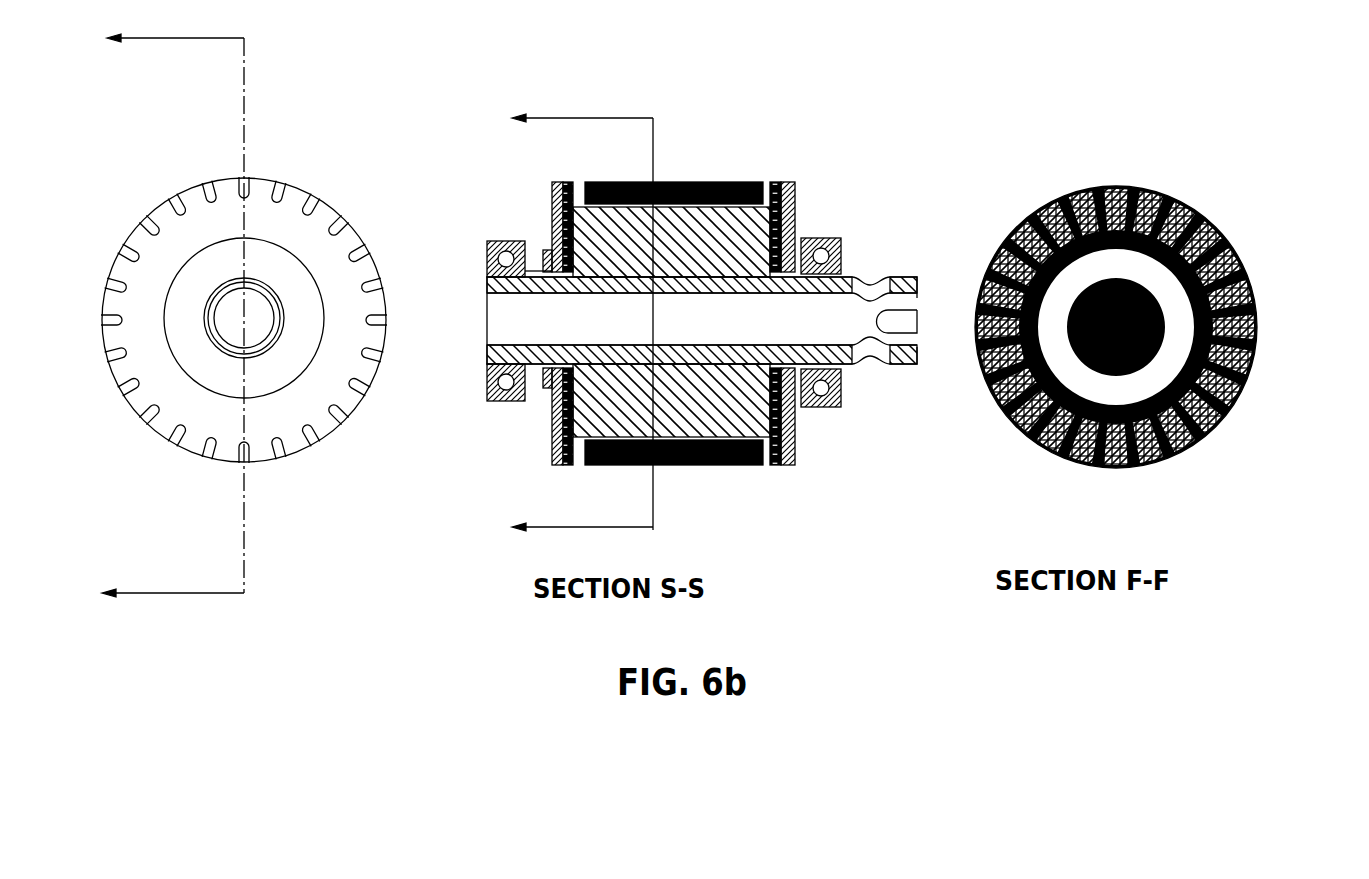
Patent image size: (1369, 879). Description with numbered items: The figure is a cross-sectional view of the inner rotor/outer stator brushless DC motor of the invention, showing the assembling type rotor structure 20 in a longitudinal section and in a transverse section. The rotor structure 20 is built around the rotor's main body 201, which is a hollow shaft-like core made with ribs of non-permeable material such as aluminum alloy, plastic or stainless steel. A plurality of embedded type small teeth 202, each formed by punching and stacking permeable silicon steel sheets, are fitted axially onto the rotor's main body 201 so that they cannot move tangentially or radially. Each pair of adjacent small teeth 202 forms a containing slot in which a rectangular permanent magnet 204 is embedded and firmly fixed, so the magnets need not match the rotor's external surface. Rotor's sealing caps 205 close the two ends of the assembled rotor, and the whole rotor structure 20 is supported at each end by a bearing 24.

The rotor structure 20 is at (1368, 66).
The bearing 24 is at (488, 243).
The rotor's main body 201 is at (915, 367).
The embedded type small teeth 202 is at (1022, 423).
The rectangular permanent magnets 204 is at (1092, 193).
The rotor's sealing caps 205 is at (820, 204).